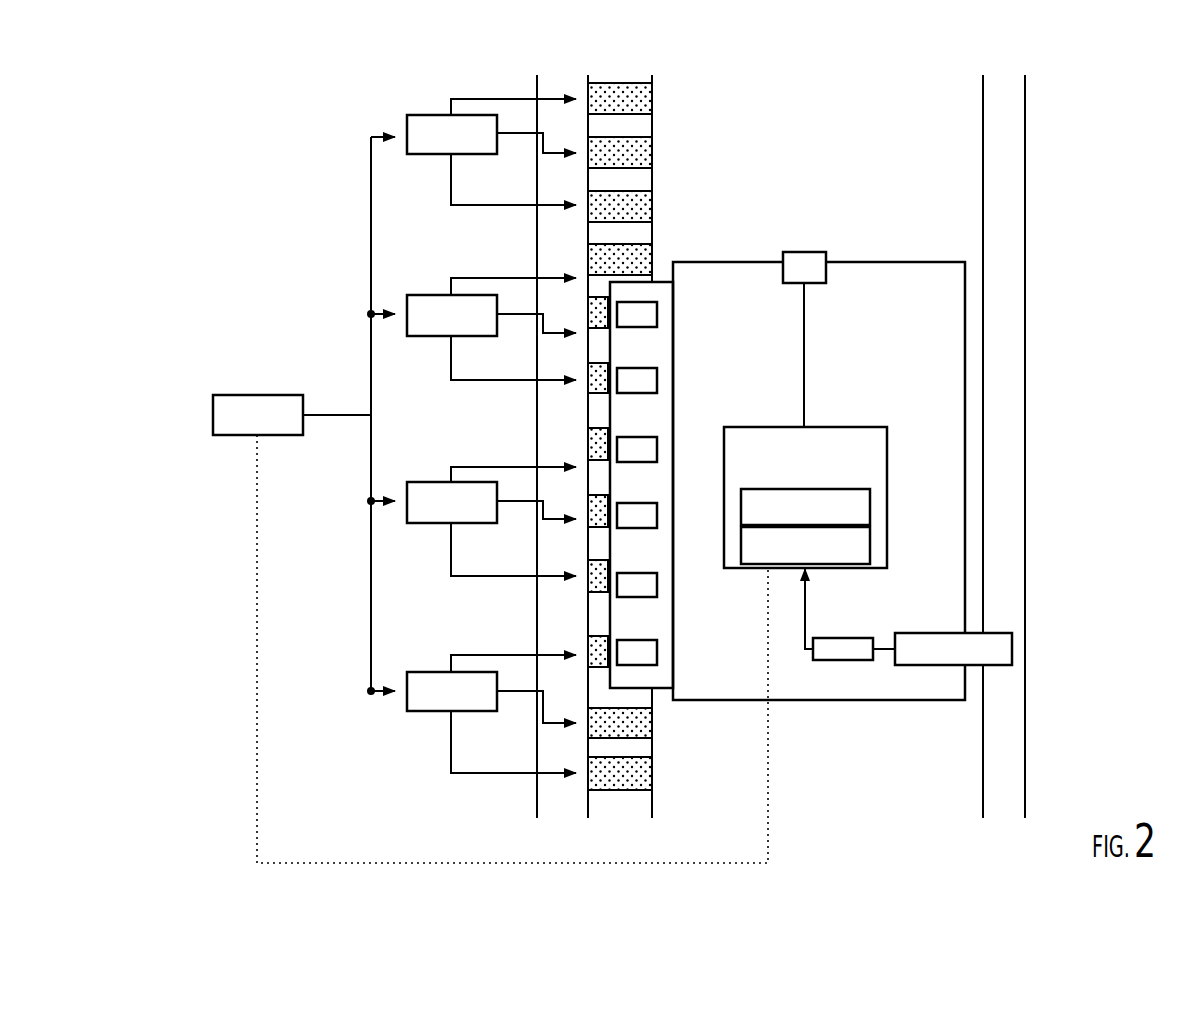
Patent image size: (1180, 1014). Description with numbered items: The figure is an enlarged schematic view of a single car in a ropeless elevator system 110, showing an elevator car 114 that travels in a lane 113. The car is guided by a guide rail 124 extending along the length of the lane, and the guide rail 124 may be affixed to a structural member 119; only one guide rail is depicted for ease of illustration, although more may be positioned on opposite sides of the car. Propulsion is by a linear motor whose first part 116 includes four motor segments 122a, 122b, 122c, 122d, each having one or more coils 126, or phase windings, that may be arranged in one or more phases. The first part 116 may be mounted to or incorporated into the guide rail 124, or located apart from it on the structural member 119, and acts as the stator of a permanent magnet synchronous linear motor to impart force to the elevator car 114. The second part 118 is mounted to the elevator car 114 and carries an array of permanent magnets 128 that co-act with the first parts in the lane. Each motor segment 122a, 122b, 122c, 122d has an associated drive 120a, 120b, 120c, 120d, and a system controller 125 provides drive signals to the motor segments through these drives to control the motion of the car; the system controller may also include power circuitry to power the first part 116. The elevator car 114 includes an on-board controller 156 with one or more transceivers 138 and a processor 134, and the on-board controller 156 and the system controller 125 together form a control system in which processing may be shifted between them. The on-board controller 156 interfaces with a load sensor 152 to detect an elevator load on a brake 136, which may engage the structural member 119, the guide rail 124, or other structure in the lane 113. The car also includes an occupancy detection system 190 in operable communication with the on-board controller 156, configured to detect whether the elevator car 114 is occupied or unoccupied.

The elevator system 110 is at (1056, 131).
The lane 113 is at (840, 92).
The elevator car 114 is at (736, 310).
The first part 116 is at (652, 750).
The second part 118 is at (645, 618).
The structural member 119 is at (555, 813).
The drive 120a is at (472, 150).
The drive 120b is at (472, 330).
The drive 120c is at (472, 517).
The drive 120d is at (472, 706).
The motor segment 122a is at (561, 228).
The motor segment 122b is at (561, 409).
The motor segment 122c is at (561, 606).
The motor segment 122d is at (561, 801).
The guide rail 124 is at (648, 128).
The system controller 125 is at (257, 395).
The coil 126 is at (642, 162).
The permanent magnet 128 is at (633, 368).
The processor 134 is at (871, 548).
The brake 136 is at (1015, 650).
The transceiver 138 is at (871, 505).
The load sensor 152 is at (843, 660).
The on-board controller 156 is at (902, 438).
The occupancy detection system 190 is at (804, 252).